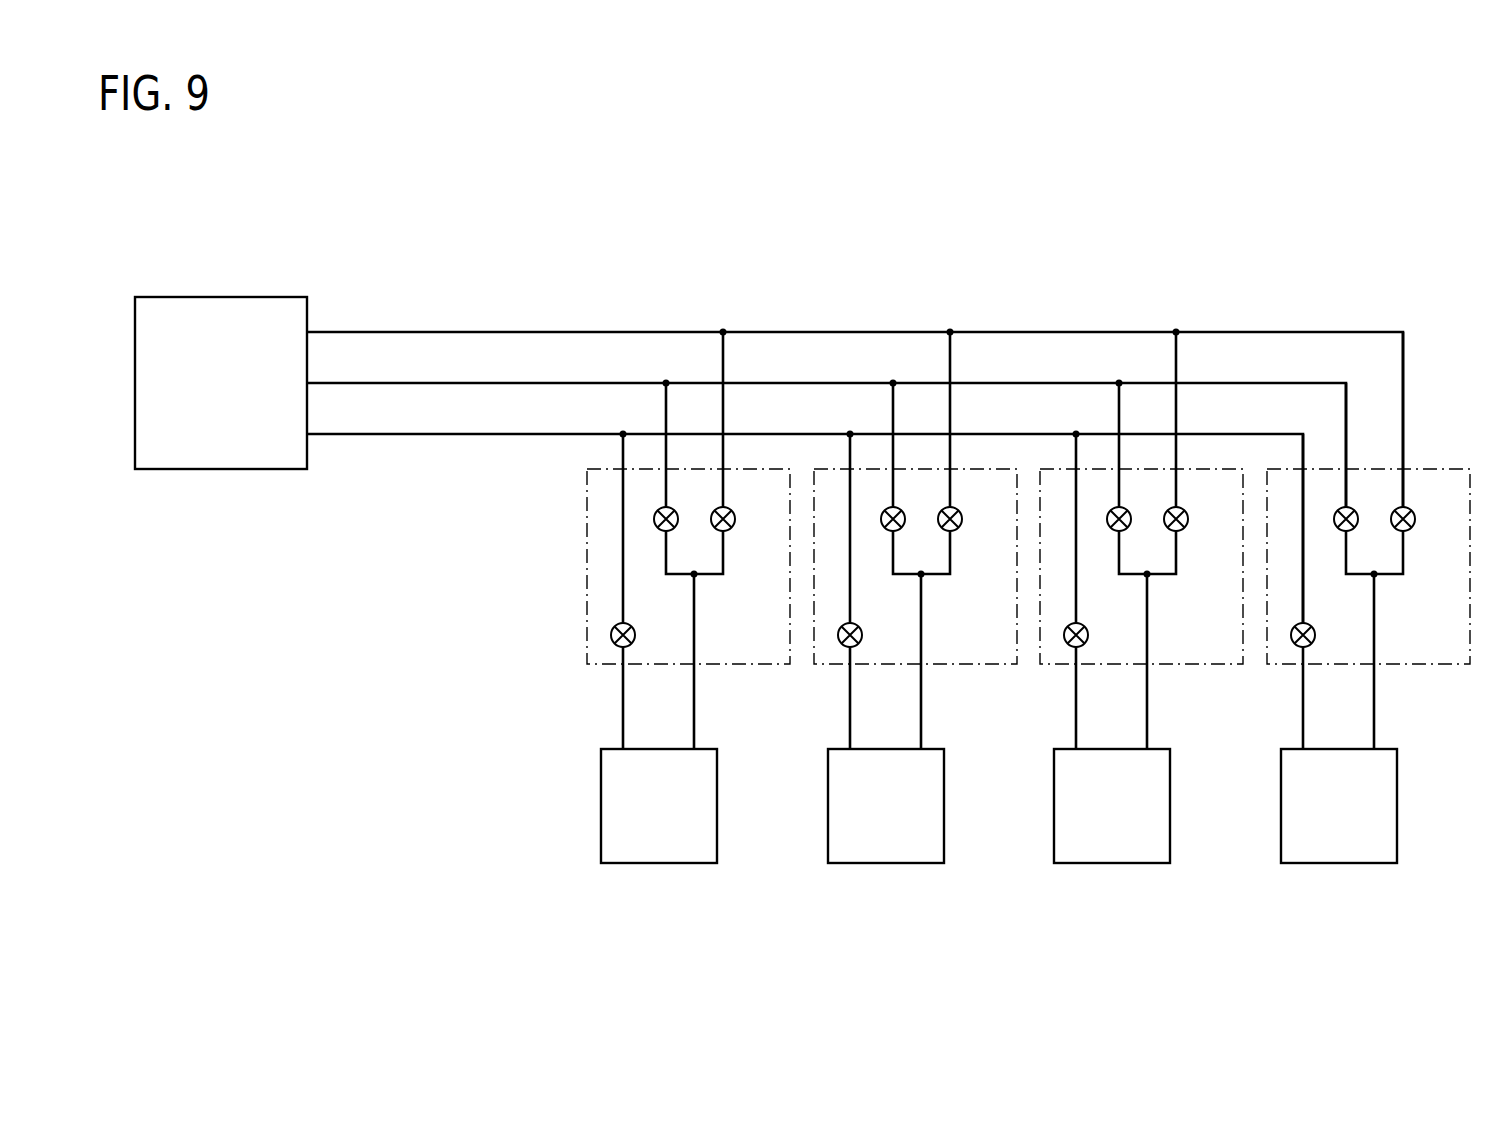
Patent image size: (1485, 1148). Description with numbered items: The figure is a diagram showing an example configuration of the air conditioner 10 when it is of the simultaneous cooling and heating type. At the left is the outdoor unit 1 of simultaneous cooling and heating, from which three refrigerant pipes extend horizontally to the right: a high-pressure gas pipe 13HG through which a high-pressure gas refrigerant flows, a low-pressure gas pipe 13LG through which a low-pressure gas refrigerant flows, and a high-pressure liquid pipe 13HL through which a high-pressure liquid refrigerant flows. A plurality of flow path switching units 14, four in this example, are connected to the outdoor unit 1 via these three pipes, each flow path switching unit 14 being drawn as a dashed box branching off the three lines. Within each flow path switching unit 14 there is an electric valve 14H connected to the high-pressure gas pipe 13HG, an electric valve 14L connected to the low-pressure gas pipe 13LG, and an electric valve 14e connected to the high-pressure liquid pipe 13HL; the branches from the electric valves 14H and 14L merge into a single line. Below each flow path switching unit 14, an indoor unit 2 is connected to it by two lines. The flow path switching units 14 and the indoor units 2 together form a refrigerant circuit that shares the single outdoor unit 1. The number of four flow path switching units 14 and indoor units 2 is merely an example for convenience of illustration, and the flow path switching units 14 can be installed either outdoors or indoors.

The outdoor unit 1 is at (224, 297).
The indoor unit 2 is at (658, 865).
The air conditioner 10 is at (1233, 274).
The high-pressure gas pipe 13HG is at (640, 332).
The low-pressure gas pipe 13LG is at (817, 383).
The high-pressure liquid pipe 13HL is at (1008, 434).
The flow path switching unit 14 is at (665, 664).
The electric valve 14L is at (678, 518).
The electric valve 14H is at (735, 519).
The electric valve 14e is at (632, 626).